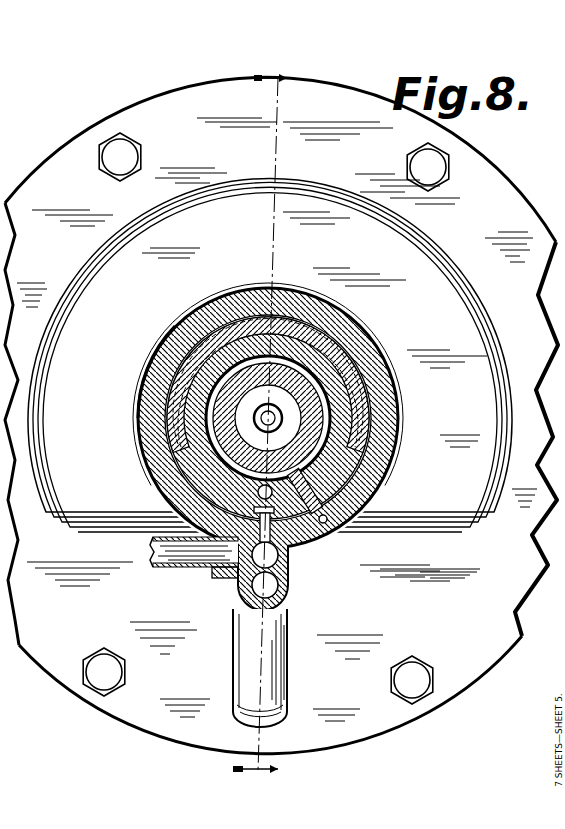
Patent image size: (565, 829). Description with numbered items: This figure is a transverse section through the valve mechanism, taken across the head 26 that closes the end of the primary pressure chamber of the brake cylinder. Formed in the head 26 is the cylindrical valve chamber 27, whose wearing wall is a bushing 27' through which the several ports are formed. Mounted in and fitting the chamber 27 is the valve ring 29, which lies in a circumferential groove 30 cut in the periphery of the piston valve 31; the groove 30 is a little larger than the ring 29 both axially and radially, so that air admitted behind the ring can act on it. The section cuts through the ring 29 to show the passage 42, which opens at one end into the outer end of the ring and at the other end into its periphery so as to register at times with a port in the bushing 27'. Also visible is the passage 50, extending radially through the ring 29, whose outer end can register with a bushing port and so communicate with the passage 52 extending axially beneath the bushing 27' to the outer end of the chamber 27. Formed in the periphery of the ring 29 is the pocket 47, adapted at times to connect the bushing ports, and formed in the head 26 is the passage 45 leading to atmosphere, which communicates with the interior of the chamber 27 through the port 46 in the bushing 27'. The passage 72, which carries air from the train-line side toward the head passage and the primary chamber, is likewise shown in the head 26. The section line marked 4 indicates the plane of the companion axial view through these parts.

The head 26 is at (120, 705).
The cylindrical valve chamber 27 is at (297, 417).
The bushing 27' is at (118, 375).
The valve ring 29 is at (365, 357).
The circumferential groove 30 is at (322, 410).
The piston valve 31 is at (372, 450).
The passage 42 is at (256, 490).
The passage 45 is at (232, 578).
The port 46 is at (312, 542).
The pocket 47 is at (256, 507).
The passage 50 is at (385, 490).
The passage 52 is at (330, 533).
The passage 72 is at (288, 594).
The section line 4- 4 is at (262, 430).